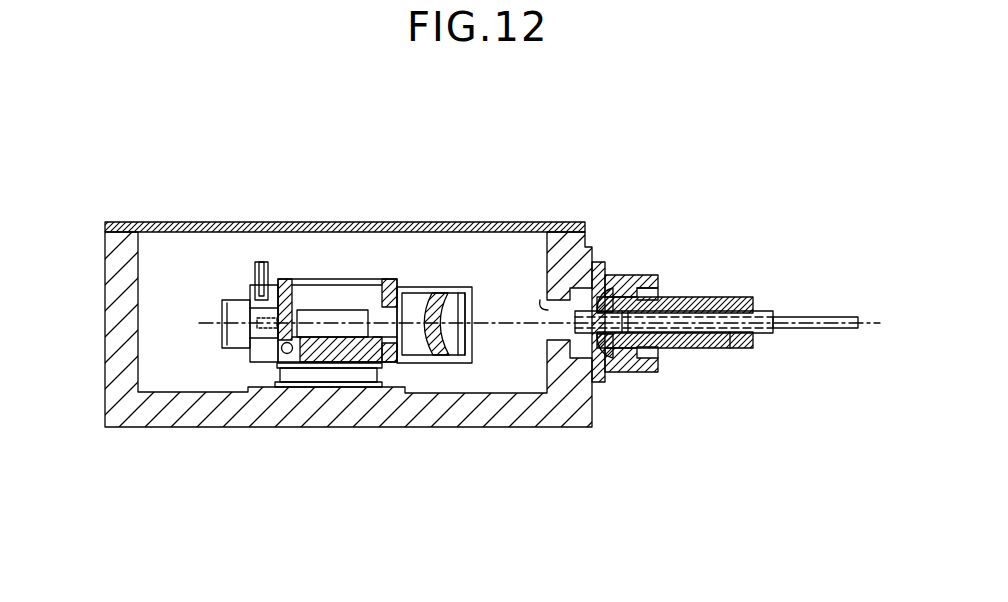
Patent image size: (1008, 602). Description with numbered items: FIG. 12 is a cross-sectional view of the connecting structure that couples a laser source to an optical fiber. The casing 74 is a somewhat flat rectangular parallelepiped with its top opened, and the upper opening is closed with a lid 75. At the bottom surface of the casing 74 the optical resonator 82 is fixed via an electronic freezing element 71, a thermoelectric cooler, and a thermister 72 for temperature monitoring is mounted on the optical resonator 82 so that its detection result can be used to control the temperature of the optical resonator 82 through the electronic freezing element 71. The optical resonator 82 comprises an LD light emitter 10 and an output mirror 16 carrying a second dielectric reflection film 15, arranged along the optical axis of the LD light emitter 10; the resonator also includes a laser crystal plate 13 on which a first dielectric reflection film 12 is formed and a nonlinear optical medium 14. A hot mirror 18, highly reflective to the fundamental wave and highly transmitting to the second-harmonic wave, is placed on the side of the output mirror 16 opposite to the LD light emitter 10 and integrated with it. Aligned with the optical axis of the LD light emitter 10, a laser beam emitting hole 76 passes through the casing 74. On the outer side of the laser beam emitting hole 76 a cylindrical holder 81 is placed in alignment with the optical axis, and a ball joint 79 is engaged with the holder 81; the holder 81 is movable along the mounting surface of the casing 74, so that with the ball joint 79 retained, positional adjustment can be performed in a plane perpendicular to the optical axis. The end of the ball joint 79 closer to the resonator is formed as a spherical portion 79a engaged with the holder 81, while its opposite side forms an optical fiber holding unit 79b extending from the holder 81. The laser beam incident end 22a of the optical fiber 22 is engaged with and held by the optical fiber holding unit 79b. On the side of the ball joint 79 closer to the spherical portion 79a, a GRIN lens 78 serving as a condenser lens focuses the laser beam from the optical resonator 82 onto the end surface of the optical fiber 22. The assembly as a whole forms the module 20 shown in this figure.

The LD light emitter 10 is at (257, 258).
The first dielectric reflection film 12 is at (283, 284).
The laser crystal plate 13 is at (312, 279).
The nonlinear optical medium 14 is at (332, 320).
The second dielectric reflection film 15 is at (424, 312).
The output mirror 16 is at (441, 300).
The hot mirror 18 is at (466, 306).
The optical module 20 is at (607, 214).
The optical fiber 22 is at (813, 315).
The laser beam incident end 22a is at (732, 343).
The electronic freezing element 71 is at (330, 378).
The thermister 72 is at (280, 352).
The casing 74 is at (175, 428).
The lid 75 is at (182, 222).
The laser beam emitting hole 76 is at (580, 256).
The GRIN lens 78 is at (623, 375).
The ball joint 79 is at (707, 290).
The spherical portion 79a is at (636, 277).
The optical fiber holding unit 79b is at (697, 350).
The cylindrical holder 81 is at (598, 278).
The optical resonator 82 is at (492, 160).